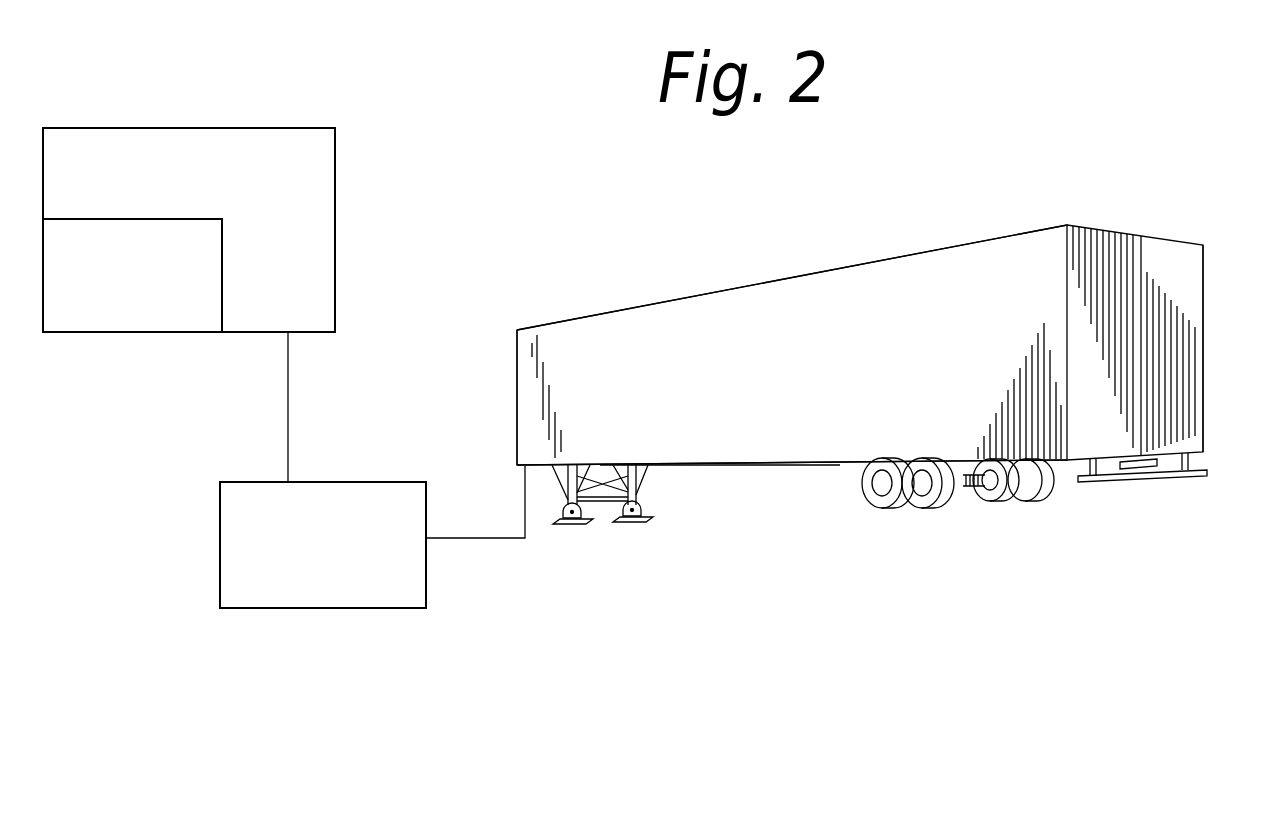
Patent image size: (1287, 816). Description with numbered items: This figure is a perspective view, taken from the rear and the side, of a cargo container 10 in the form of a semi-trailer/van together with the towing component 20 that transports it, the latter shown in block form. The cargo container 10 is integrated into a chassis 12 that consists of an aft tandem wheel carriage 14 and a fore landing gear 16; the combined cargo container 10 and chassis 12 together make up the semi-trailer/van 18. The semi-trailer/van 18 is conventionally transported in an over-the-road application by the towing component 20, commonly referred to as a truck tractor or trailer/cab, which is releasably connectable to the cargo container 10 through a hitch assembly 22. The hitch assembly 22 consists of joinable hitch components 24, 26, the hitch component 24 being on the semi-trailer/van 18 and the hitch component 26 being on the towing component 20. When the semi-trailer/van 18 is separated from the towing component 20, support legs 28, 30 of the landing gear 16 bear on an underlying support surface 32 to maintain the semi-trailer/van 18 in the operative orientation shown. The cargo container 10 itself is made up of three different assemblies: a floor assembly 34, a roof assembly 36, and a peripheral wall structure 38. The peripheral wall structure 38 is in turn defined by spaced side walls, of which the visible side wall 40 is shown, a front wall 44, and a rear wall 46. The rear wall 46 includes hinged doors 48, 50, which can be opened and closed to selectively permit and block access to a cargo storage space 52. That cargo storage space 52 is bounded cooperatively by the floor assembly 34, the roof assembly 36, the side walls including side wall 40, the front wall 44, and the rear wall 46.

The cargo container 10 is at (1092, 202).
The chassis 12 is at (787, 467).
The tandem wheel carriage 14 is at (913, 517).
The landing gear 16 is at (597, 540).
The semi-trailer/van 18 is at (977, 515).
The towing component 20 is at (243, 226).
The hitch assembly 22 is at (153, 450).
The hitch component 24 is at (308, 586).
The hitch component 26 is at (120, 311).
The support leg 28 is at (560, 522).
The support leg 30 is at (640, 523).
The support surface 32 is at (785, 637).
The floor assembly 34 is at (717, 467).
The roof assembly 36 is at (823, 270).
The peripheral wall structure 38 is at (1025, 315).
The side wall 40 is at (758, 387).
The front wall 44 is at (517, 387).
The rear wall 46 is at (1187, 383).
The hinged door 48 is at (1113, 427).
The hinged door 50 is at (1183, 317).
The cargo storage space 52 is at (900, 325).